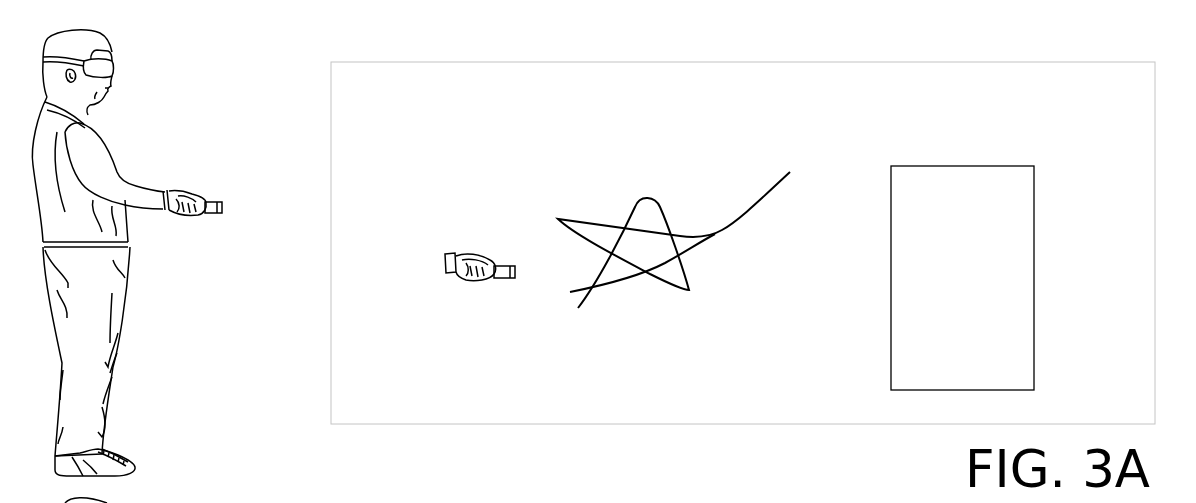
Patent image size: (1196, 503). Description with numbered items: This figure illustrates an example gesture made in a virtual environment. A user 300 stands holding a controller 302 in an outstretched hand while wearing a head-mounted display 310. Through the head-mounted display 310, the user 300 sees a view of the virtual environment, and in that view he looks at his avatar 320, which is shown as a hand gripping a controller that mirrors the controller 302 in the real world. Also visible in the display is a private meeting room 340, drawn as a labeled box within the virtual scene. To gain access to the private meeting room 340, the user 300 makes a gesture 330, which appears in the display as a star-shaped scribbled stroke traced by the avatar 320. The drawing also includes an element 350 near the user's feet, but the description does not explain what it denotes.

The user 300 is at (108, 58).
The controller 302 is at (222, 200).
The head-mounted display 310 is at (743, 243).
The avatar 320 is at (455, 228).
The gesture 330 is at (683, 227).
The private meeting room 340 is at (962, 278).
The floor mat 350 is at (137, 502).